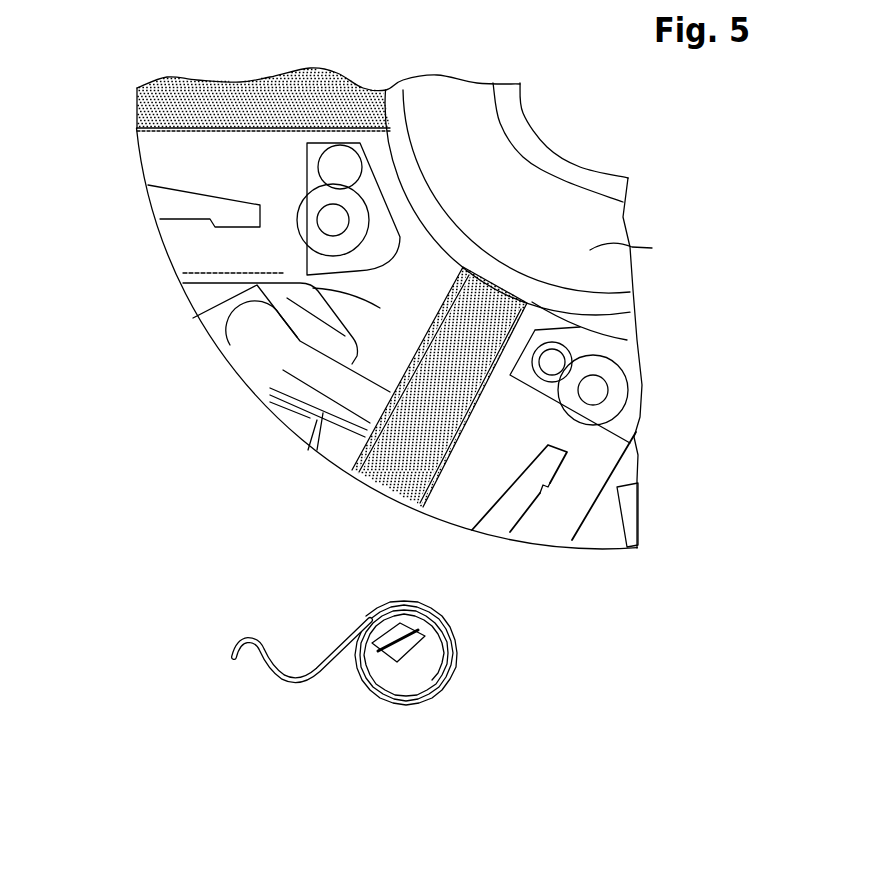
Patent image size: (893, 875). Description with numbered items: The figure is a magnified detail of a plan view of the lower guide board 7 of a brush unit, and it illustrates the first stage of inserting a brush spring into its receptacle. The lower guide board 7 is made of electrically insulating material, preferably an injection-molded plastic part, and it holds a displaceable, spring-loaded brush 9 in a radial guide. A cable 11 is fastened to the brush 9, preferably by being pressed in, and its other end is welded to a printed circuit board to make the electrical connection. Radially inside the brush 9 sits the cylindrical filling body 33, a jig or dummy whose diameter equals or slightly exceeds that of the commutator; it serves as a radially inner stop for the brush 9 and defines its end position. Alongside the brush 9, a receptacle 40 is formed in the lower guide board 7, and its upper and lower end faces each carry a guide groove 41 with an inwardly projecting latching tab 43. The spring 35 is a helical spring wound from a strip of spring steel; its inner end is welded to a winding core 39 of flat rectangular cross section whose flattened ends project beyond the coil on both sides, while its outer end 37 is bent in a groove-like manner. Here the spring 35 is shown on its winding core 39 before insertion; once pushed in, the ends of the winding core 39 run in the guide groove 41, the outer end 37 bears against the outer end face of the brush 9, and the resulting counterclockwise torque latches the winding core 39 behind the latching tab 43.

The lower guide board 7 is at (298, 288).
The brush 9 is at (397, 463).
The cable 11 is at (298, 372).
The cylindrical filling body 33 is at (597, 243).
The spring 35 is at (327, 678).
The outer end of the spring 37 is at (243, 640).
The winding core 39 is at (395, 650).
The receptacle 40 is at (163, 150).
The guide groove 41 is at (168, 205).
The latching tab 43 is at (550, 485).